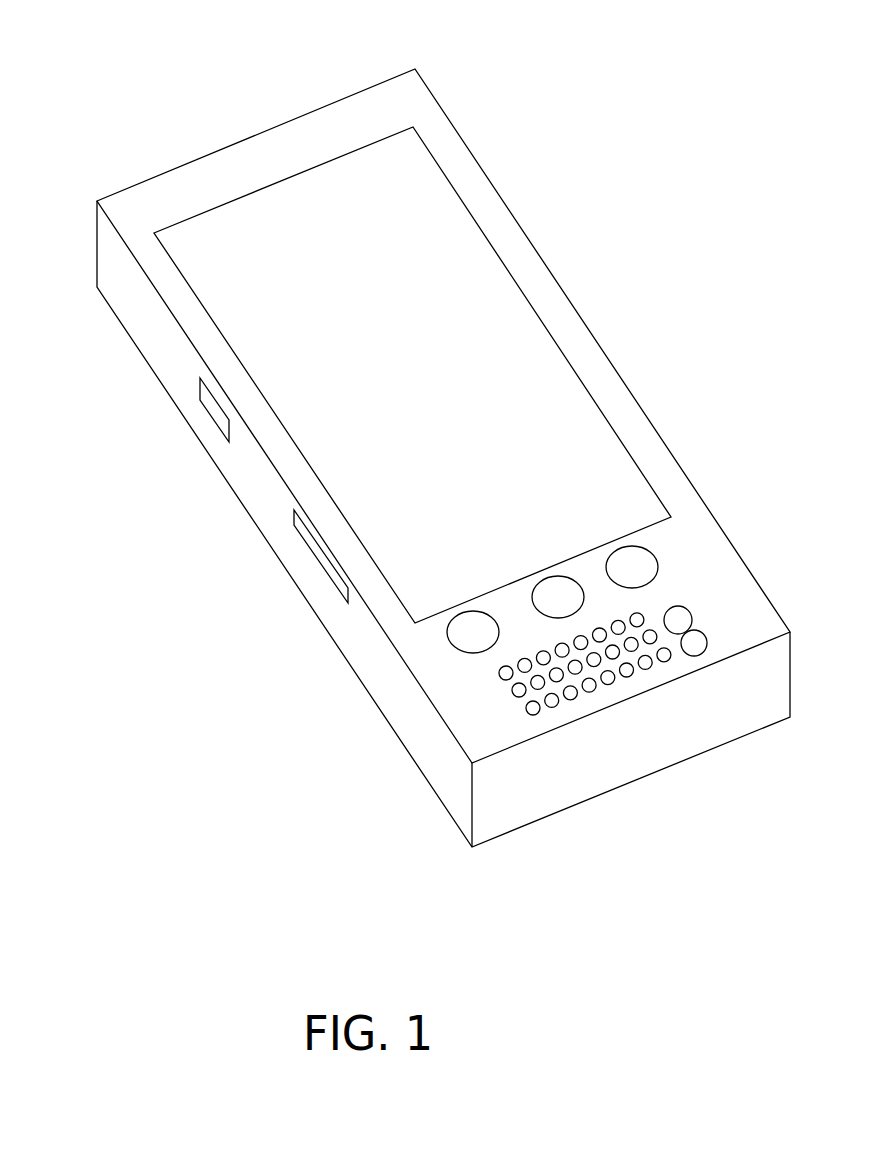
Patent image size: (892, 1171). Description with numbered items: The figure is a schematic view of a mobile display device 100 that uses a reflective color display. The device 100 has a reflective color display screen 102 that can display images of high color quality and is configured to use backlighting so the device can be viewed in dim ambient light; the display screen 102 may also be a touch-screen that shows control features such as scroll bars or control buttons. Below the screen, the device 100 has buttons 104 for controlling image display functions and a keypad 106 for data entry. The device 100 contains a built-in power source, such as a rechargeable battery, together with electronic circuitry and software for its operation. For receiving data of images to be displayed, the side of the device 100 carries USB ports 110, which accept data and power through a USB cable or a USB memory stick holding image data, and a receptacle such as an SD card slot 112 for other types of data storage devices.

The display device 100 is at (288, 84).
The reflective color display screen 102 is at (566, 437).
The buttons 104 is at (642, 567).
The keypad 106 is at (515, 710).
The USB ports 110 is at (218, 425).
The SD card slot 112 is at (309, 545).